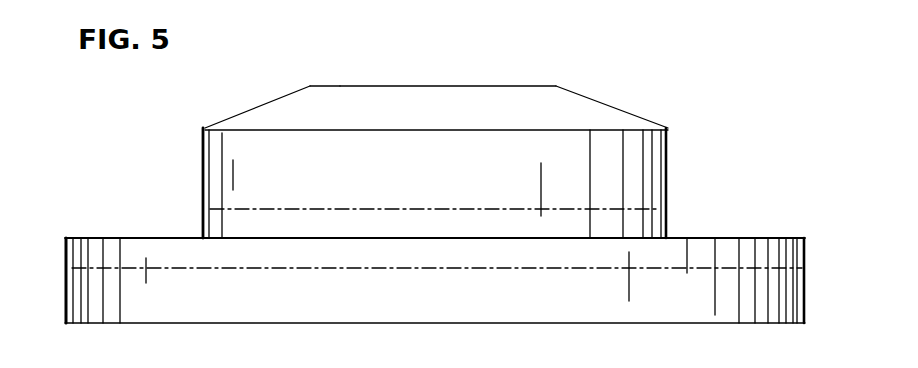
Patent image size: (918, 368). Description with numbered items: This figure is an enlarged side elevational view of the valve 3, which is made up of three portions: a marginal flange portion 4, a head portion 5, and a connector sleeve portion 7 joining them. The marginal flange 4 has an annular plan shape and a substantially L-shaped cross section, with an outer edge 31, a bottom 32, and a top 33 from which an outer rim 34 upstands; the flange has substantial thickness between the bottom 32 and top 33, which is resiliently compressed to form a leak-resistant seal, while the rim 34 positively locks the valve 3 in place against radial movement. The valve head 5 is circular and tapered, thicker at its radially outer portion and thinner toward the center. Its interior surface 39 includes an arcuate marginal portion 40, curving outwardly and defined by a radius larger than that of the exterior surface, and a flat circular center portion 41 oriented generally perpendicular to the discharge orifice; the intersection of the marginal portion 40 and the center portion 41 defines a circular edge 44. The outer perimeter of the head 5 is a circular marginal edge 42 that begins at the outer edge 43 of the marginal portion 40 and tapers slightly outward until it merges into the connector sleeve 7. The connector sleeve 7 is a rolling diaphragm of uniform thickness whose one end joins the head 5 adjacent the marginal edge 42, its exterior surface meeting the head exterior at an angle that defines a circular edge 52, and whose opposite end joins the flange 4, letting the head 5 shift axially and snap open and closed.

The valve 3 is at (662, 100).
The marginal flange portion 4 is at (77, 237).
The head portion 5 is at (248, 106).
The connector sleeve portion 7 is at (668, 170).
The outer edge 31 is at (805, 257).
The bottom 32 is at (740, 323).
The top 33 is at (644, 269).
The outer rim 34 is at (697, 237).
The interior surface 39 is at (210, 120).
The marginal portion 40 is at (607, 99).
The center portion 41 is at (473, 86).
The marginal edge 42 is at (201, 152).
The outer edge 43 is at (344, 131).
The circular edge 44 is at (310, 86).
The circular edge 52 is at (444, 207).